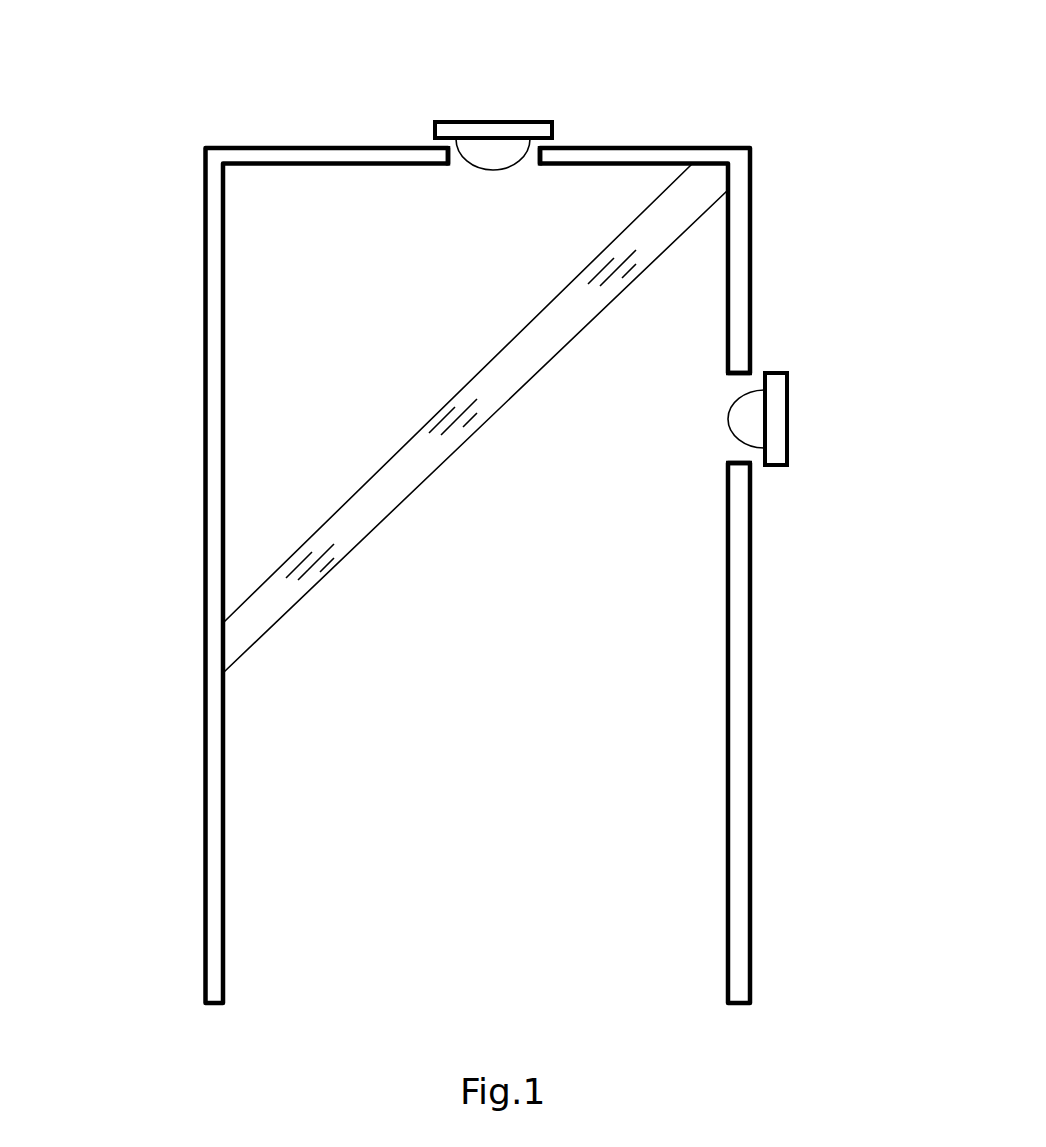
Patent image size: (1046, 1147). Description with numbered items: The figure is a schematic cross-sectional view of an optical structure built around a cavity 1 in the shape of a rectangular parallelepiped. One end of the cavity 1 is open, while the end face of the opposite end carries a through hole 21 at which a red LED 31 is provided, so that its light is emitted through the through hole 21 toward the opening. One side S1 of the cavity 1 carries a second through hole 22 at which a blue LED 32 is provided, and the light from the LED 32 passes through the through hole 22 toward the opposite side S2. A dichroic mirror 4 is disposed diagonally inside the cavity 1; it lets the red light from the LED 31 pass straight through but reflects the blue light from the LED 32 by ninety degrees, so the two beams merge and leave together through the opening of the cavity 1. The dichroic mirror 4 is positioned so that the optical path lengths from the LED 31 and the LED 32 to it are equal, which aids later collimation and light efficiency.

The cavity 1 is at (479, 506).
The side S1 is at (751, 643).
The side S2 is at (204, 483).
The through hole 21 is at (524, 180).
The through hole 22 is at (713, 402).
The red LED 31 is at (483, 120).
The blue LED 32 is at (789, 433).
The dichroic mirror 4 is at (392, 513).